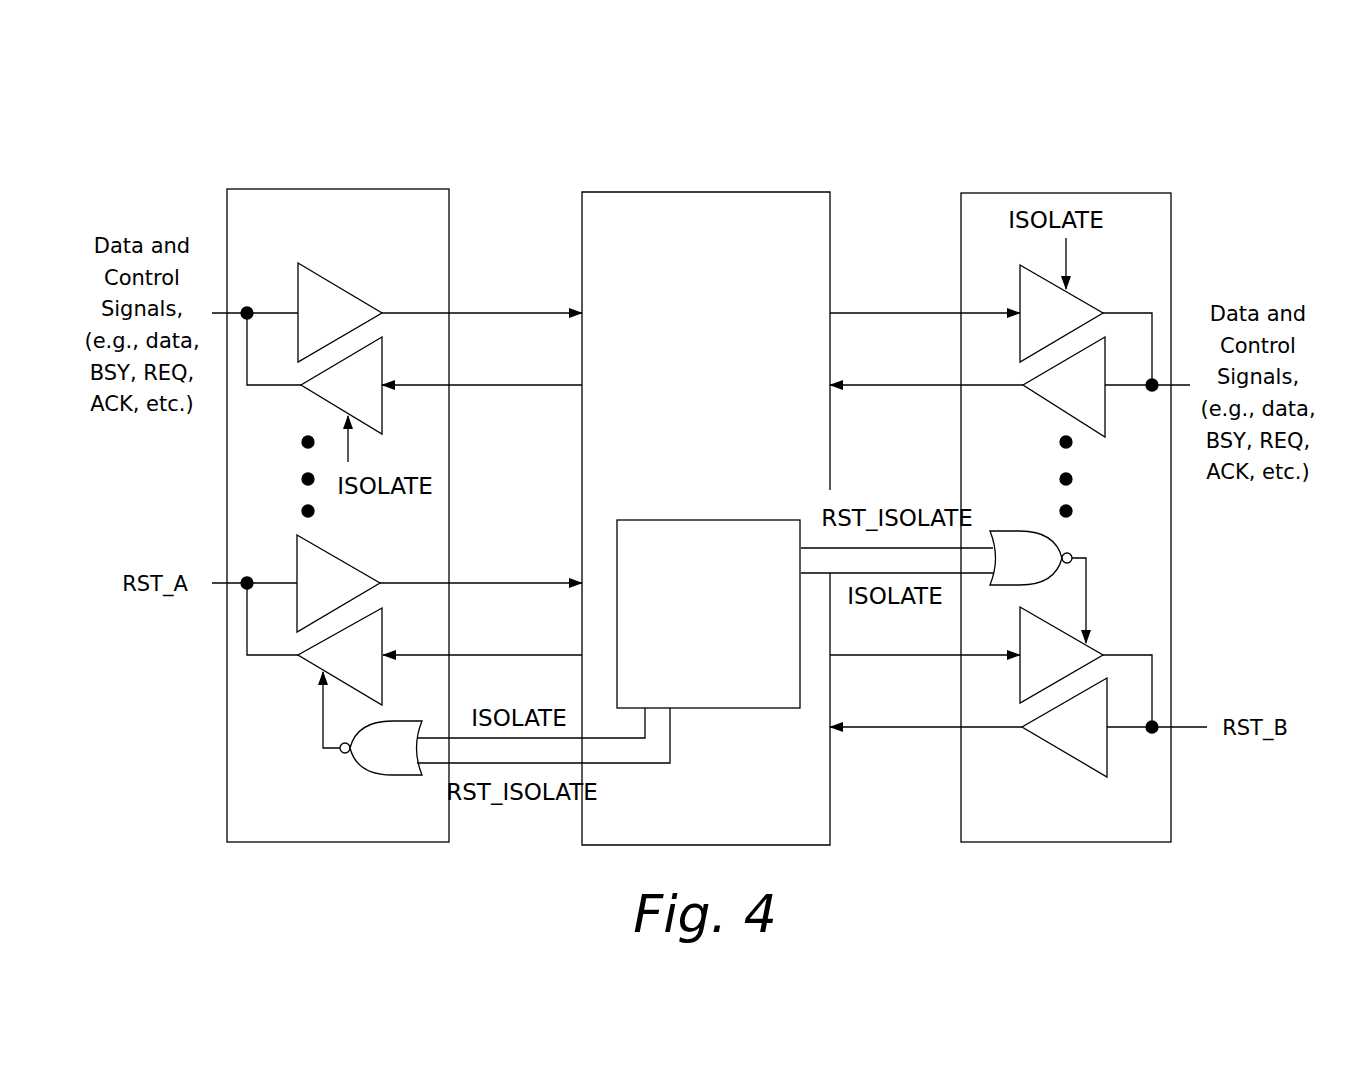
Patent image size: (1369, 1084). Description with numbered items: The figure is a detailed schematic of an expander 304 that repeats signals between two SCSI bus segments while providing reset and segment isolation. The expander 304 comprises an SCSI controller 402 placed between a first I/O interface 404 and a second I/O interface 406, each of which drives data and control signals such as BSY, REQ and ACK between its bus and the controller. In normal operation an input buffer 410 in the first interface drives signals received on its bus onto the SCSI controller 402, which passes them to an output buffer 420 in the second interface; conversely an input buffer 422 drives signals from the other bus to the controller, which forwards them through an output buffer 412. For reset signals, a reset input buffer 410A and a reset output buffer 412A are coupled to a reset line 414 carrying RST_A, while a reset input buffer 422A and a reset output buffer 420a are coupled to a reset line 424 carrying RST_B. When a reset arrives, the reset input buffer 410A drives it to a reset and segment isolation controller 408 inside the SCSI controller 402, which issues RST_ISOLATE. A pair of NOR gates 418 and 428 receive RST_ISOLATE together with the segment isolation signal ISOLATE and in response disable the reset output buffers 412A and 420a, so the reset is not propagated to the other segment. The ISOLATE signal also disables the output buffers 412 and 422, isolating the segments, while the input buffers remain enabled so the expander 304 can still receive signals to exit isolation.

The expander 304 is at (1050, 84).
The SCSI controller 402 is at (708, 192).
The I/O interface 404 is at (338, 498).
The I/O interface 406 is at (1066, 498).
The reset and segment isolation controller 408 is at (709, 520).
The input buffer 410 is at (335, 283).
The output buffer 412 is at (325, 405).
The reset input buffer 410A is at (352, 560).
The reset output buffer 412A is at (320, 660).
The reset line 414 is at (243, 578).
The NOR gate 418 is at (353, 776).
The output buffer 420 is at (1073, 311).
The input buffer 422 is at (1093, 410).
The reset output buffer 420a is at (1097, 642).
The reset input buffer 422A is at (1050, 750).
The reset line 424 is at (1207, 727).
The NOR gate 428 is at (1010, 540).